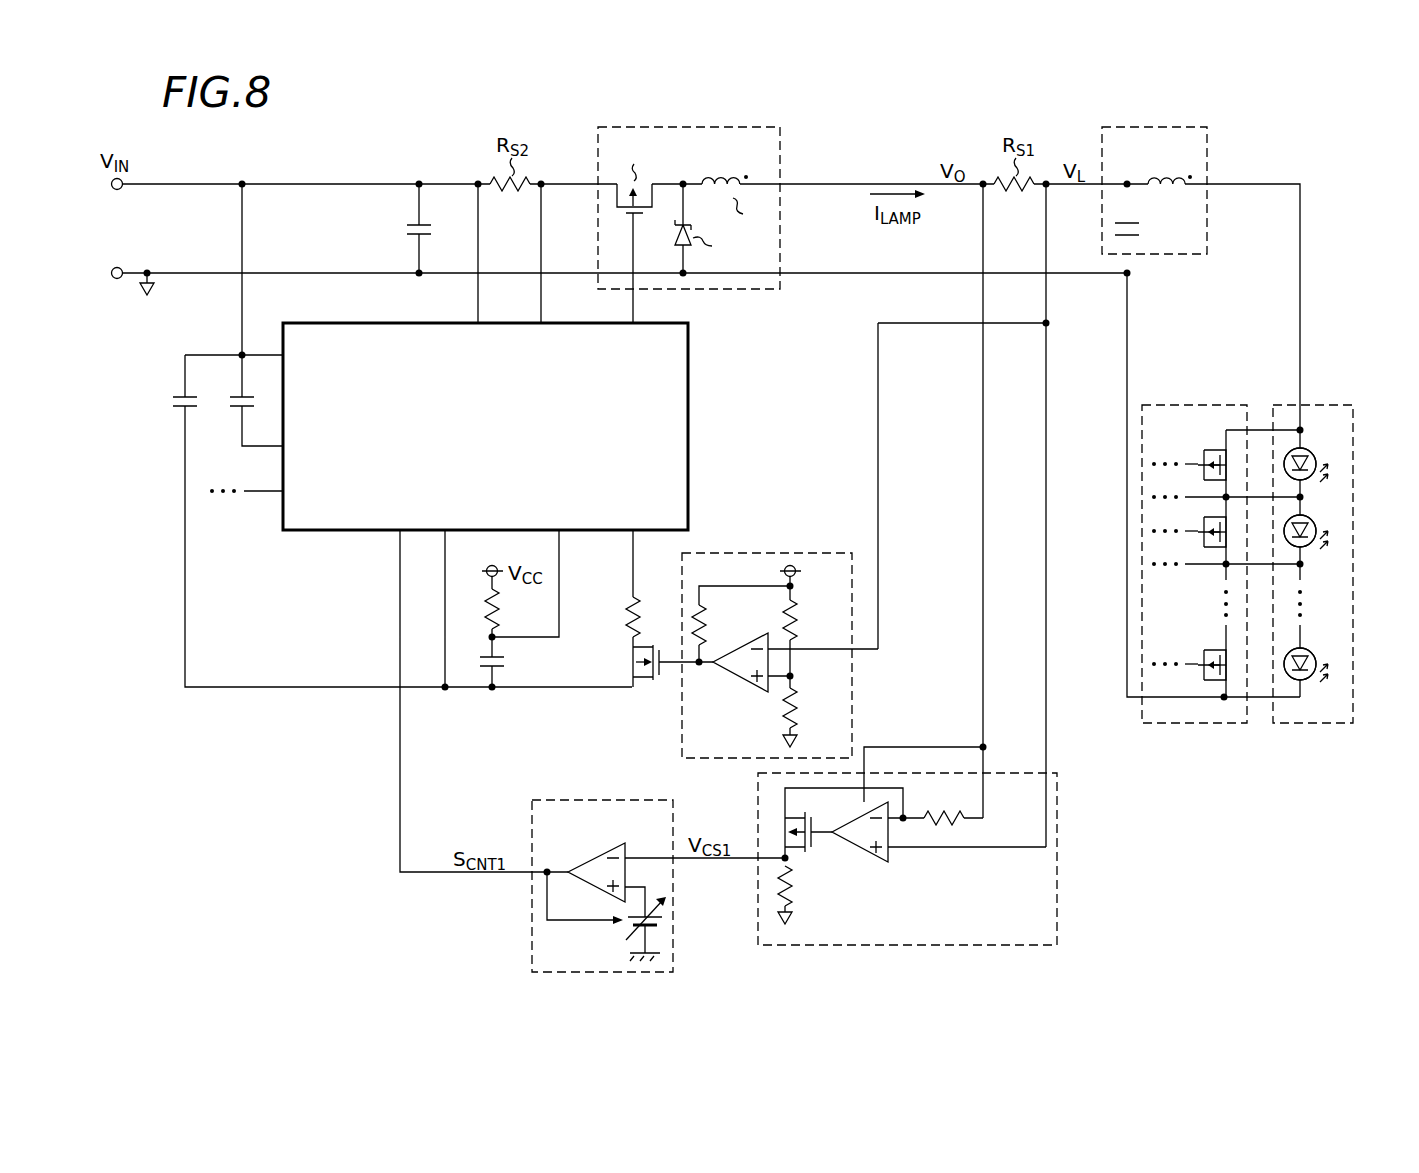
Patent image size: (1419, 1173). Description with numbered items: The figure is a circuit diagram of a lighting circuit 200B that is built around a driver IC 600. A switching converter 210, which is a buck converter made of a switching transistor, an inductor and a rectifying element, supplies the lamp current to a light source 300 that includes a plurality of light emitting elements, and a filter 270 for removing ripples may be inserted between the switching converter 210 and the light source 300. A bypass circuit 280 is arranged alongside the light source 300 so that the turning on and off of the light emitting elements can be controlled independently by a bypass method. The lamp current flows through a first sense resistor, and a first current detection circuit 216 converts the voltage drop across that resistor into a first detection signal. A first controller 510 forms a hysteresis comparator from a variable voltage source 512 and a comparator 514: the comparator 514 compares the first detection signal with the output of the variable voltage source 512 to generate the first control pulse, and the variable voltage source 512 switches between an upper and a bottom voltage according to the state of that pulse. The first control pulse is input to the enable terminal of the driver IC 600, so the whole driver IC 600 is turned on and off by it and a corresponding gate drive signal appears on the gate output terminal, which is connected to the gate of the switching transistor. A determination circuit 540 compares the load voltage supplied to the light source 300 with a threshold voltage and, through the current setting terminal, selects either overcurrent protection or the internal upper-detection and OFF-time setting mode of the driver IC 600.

The lighting circuit 200B is at (1402, 145).
The switching converter 210 is at (781, 143).
The first current detection circuit 216 is at (1058, 892).
The filter 270 is at (1208, 142).
The bypass circuit 280 is at (1177, 405).
The light source 300 is at (1332, 405).
The first controller 510 is at (564, 886).
The variable voltage source 512 is at (609, 928).
The comparator 514 is at (600, 857).
The determination circuit 540 is at (750, 553).
The driver IC 600 is at (690, 424).